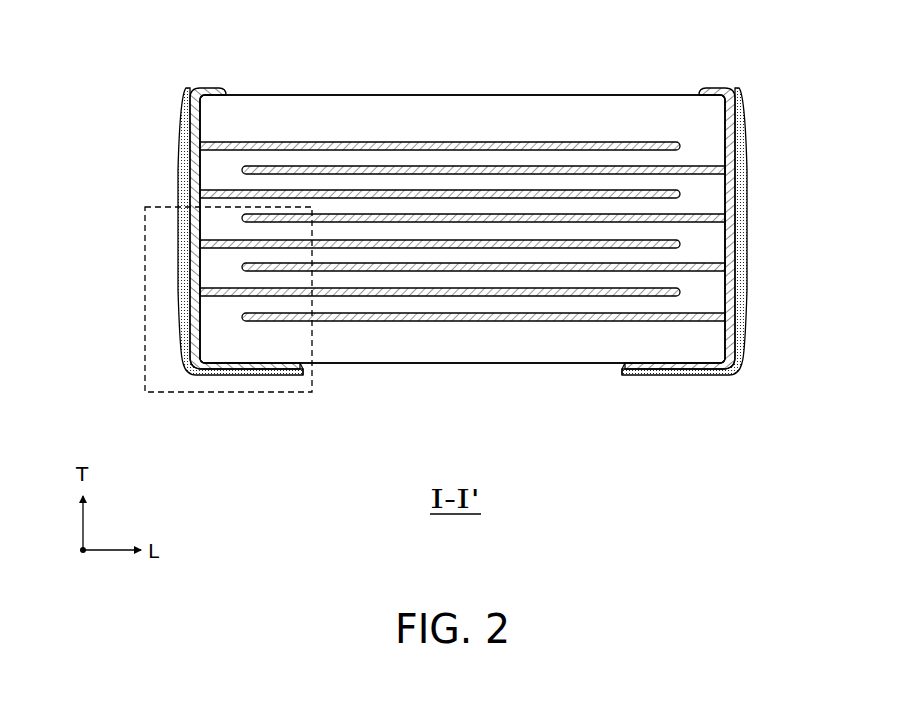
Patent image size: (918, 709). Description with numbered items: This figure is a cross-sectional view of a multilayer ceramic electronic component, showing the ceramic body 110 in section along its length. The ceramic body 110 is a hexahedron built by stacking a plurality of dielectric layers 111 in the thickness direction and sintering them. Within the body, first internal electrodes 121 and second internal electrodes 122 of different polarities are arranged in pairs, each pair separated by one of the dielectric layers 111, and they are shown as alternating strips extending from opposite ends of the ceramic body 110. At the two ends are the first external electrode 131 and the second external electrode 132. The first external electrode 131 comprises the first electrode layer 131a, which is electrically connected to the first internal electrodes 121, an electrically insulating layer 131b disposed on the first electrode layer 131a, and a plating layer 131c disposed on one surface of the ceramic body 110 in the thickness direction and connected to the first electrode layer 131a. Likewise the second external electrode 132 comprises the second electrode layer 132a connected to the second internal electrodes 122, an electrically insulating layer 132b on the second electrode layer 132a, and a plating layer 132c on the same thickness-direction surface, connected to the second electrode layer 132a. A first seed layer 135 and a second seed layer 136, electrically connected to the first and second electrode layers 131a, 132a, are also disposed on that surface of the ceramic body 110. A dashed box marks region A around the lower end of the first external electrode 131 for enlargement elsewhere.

The ceramic body 110 is at (460, 95).
The dielectric layer 111 is at (705, 193).
The first internal electrode 121 is at (665, 192).
The second internal electrode 122 is at (700, 217).
The first external electrode 131 is at (287, 284).
The first electrode layer 131a is at (212, 372).
The electrically insulating layer 131b is at (222, 373).
The plating layer 131c is at (294, 374).
The first seed layer 135 is at (350, 400).
The second external electrode 132 is at (637, 284).
The second electrode layer 132a is at (710, 372).
The electrically insulating layer 132b is at (702, 373).
The plating layer 132c is at (630, 374).
The second seed layer 136 is at (573, 400).
The enlarged region A is at (145, 297).